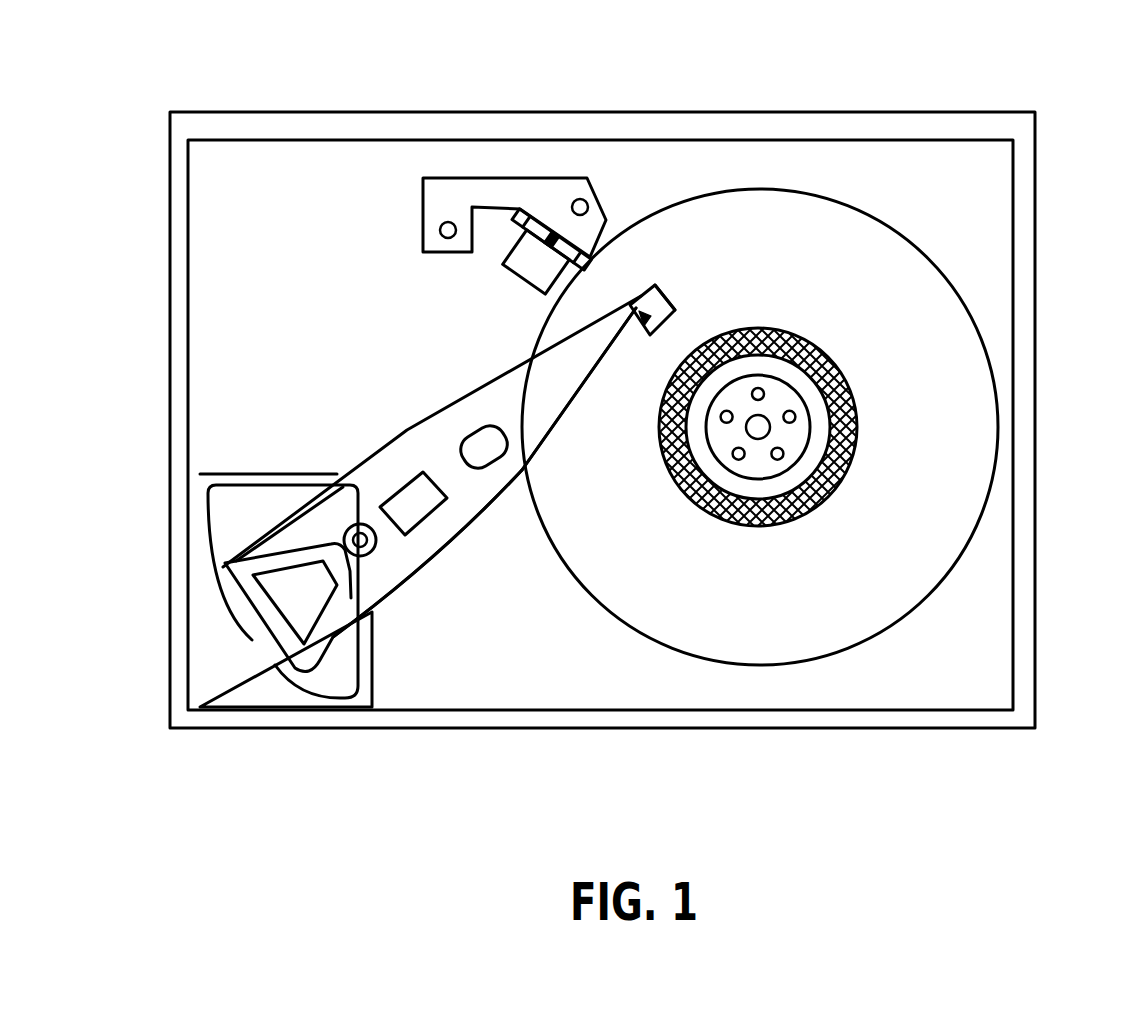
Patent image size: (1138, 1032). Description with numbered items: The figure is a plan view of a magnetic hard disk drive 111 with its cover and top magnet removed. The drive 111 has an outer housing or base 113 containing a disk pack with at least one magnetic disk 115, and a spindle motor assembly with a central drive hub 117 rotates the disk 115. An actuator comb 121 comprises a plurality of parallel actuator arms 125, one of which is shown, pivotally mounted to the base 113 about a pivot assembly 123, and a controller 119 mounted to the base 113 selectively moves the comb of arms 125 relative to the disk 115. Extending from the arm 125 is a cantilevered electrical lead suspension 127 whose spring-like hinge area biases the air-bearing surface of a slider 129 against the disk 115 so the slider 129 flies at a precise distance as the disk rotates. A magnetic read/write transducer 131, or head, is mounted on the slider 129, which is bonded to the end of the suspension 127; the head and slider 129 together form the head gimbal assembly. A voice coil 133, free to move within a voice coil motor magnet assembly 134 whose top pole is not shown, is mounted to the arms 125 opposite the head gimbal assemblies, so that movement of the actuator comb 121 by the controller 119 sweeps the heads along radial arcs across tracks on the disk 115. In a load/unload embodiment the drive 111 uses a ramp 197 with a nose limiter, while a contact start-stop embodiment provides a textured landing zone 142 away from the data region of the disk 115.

The hard disk drive 111 is at (637, 52).
The base 113 is at (1023, 175).
The magnetic disk 115 is at (878, 218).
The central drive hub 117 is at (792, 435).
The controller 119 is at (296, 692).
The actuator comb 121 is at (477, 377).
The pivot assembly 123 is at (377, 547).
The actuator arm 125 is at (478, 522).
The electrical lead suspension 127 is at (560, 385).
The slider 129 is at (663, 297).
The magnetic read/write transducer 131 is at (675, 310).
The voice coil 133 is at (268, 567).
The voice coil motor magnet assembly 134 is at (275, 663).
The textured landing zone 142 is at (777, 328).
The ramp 197 is at (538, 290).